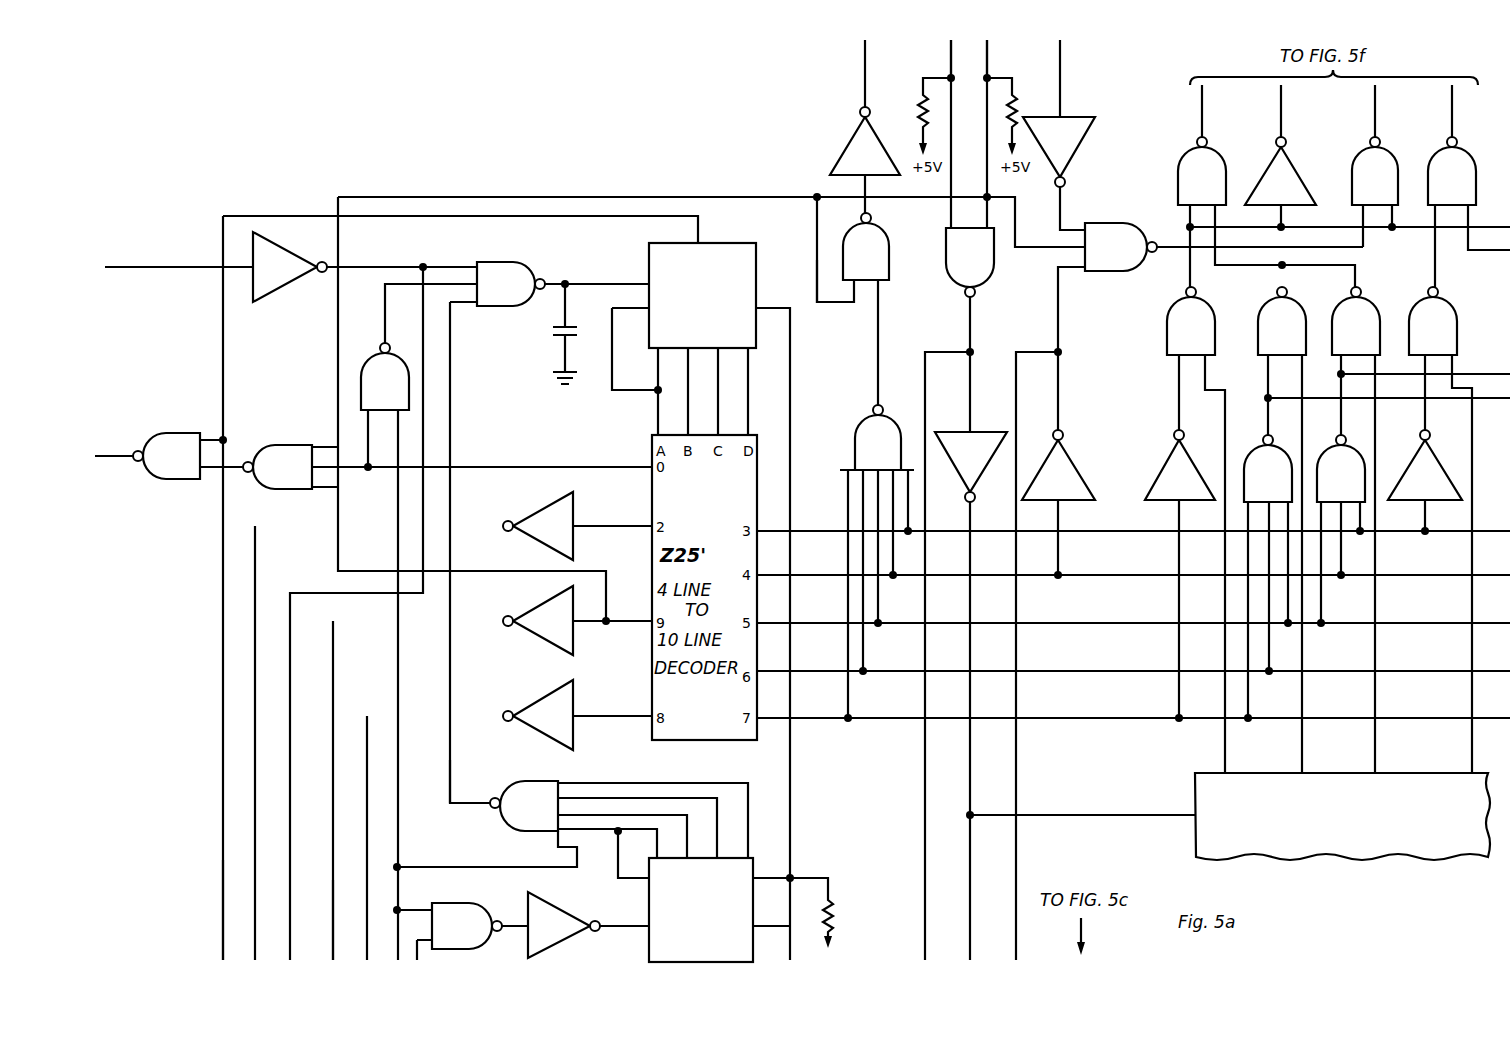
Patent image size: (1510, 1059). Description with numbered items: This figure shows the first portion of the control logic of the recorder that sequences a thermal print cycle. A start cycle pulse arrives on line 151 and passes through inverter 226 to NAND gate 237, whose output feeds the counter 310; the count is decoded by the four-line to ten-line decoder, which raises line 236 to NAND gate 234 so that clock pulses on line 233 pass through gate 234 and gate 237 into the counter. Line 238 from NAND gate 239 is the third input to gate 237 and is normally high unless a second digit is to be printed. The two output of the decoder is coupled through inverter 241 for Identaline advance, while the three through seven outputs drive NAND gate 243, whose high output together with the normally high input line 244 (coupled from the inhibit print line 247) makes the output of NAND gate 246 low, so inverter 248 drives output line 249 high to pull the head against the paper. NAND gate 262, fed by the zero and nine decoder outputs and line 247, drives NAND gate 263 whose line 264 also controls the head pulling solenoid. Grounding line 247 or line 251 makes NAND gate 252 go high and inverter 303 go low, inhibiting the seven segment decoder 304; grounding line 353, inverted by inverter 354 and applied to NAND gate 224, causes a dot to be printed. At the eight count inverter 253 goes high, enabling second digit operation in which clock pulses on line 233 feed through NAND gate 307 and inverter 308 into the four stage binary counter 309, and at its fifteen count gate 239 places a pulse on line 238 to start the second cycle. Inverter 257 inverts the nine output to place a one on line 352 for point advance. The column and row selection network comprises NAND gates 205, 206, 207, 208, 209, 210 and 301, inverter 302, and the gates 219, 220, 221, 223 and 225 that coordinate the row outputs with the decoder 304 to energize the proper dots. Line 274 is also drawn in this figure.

The start cycle pulse line 151 is at (167, 267).
The inverter 226 is at (278, 292).
The line 264 is at (122, 455).
The NAND gate 263 is at (187, 432).
The NAND gate 262 is at (292, 444).
The line 236 is at (552, 464).
The NAND gate 234 is at (379, 346).
The NAND gate 237 is at (542, 250).
The counter Z26' 310 is at (743, 243).
The inverter 241 is at (542, 510).
The inverter 257 is at (537, 615).
The inverter 253 is at (542, 703).
The line 238 is at (452, 778).
The NAND gate 239 is at (525, 780).
The clock pulse line 233 is at (397, 866).
The line 274 is at (223, 888).
The line 352 is at (333, 920).
The NAND gate 307 is at (465, 903).
The inverter 308 is at (572, 913).
The counter 309 is at (648, 940).
The output line 249 is at (868, 90).
The inverter 248 is at (848, 140).
The line 251 is at (960, 55).
The inhibit print line 247 is at (993, 63).
The line 353 is at (1062, 82).
The inverter 354 is at (1090, 138).
The NAND gate 224 is at (1113, 223).
The NAND gate 246 is at (890, 243).
The input line 244 is at (835, 303).
The NAND gate 252 is at (987, 280).
The NAND gate 243 is at (863, 418).
The inverter 303 is at (997, 413).
The inverter 223 is at (1068, 453).
The NAND gate 206 is at (1220, 140).
The inverter 302 is at (1290, 157).
The NAND gate 301 is at (1395, 147).
The NAND gate 210 is at (1470, 148).
The NAND gate 205 is at (1218, 312).
The NAND gate 207 is at (1304, 312).
The NAND gate 208 is at (1382, 312).
The NAND gate 209 is at (1462, 312).
The inverter 219 is at (1145, 478).
The NAND gate 220 is at (1258, 447).
The NAND gate 221 is at (1332, 447).
The inverter 225 is at (1412, 462).
The seven segment decoder 304 is at (1195, 790).